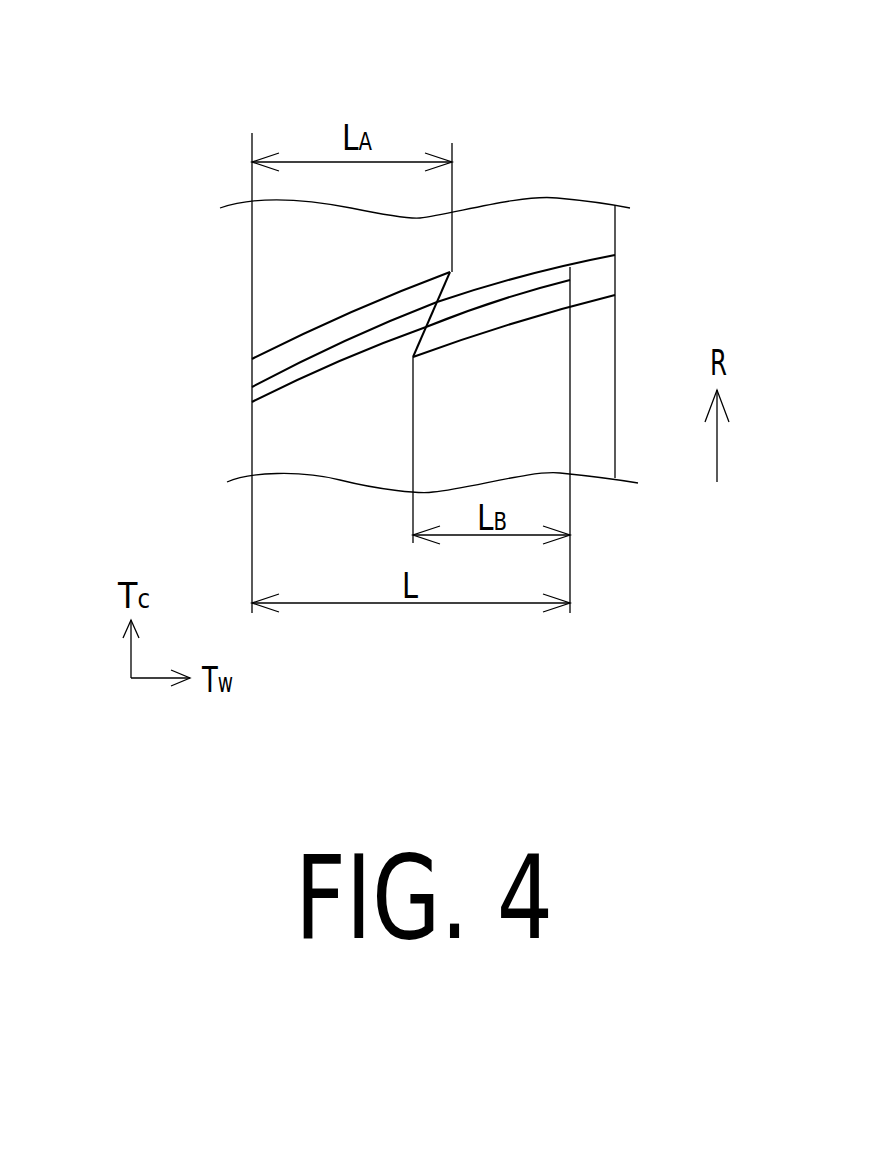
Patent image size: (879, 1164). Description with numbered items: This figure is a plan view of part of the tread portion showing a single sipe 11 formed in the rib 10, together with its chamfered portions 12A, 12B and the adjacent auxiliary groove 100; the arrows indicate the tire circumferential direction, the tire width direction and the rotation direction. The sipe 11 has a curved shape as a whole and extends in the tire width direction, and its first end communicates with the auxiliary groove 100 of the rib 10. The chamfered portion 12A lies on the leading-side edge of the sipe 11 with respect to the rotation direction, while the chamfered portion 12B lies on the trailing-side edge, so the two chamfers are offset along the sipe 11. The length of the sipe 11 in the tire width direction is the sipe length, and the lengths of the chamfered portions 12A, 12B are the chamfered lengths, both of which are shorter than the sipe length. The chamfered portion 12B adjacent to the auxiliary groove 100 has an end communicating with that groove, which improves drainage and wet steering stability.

The rib 10 is at (615, 117).
The sipe 11 is at (258, 395).
The chamfered portion 12A is at (342, 327).
The chamfered portion 12B is at (505, 310).
The auxiliary groove 100 is at (593, 278).